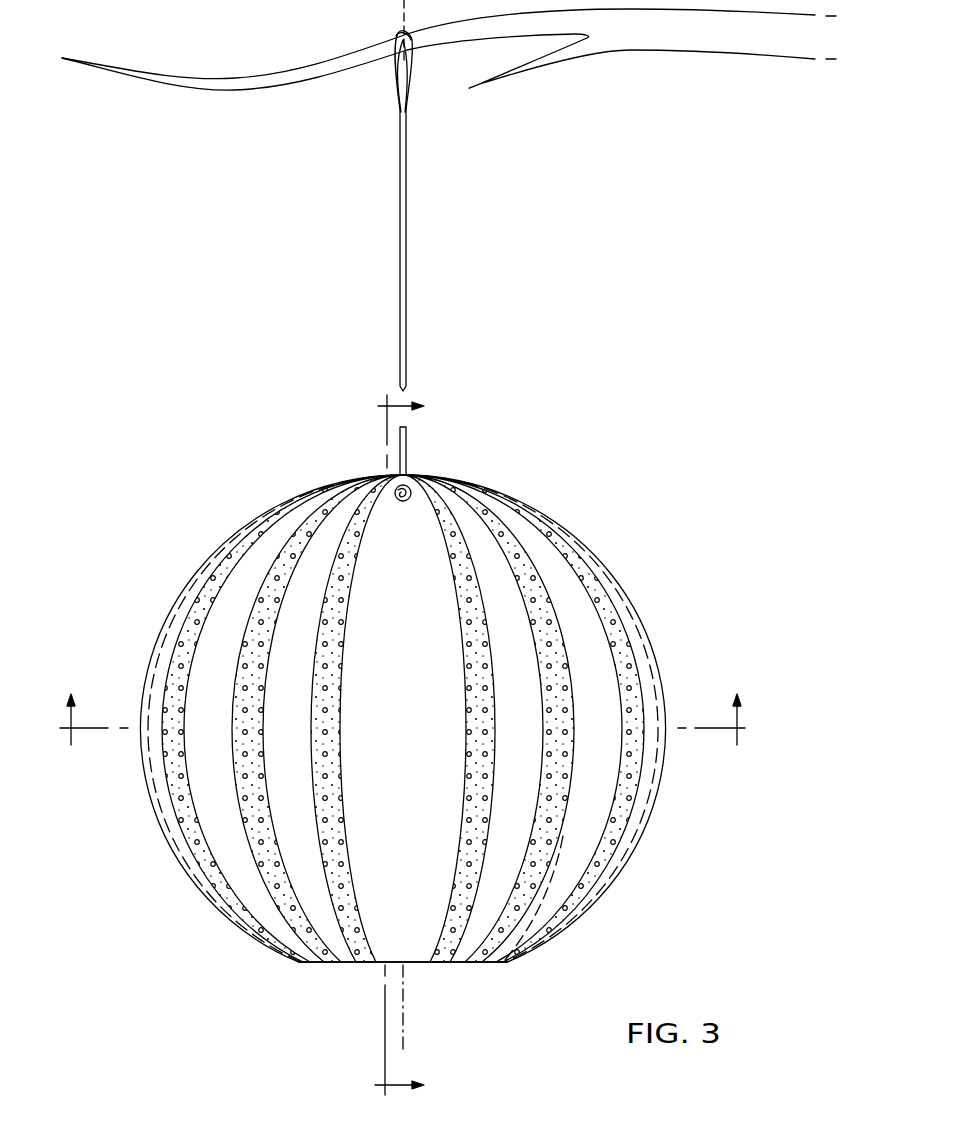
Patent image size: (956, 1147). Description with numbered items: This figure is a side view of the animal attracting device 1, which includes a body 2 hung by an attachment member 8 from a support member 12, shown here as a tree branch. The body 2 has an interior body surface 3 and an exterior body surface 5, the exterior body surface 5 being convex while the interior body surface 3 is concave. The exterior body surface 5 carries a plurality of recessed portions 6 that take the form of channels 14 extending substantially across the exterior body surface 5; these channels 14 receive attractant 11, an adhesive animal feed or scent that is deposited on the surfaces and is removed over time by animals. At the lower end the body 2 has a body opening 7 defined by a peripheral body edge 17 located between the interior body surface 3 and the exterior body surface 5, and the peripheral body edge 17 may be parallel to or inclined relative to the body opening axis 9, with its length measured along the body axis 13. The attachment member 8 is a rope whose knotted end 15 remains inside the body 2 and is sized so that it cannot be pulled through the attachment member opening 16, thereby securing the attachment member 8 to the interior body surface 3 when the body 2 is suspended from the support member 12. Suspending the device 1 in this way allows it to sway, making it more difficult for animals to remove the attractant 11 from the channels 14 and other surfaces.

The animal attracting device 1 is at (392, 761).
The body 2 is at (165, 622).
The interior body surface 3 is at (596, 888).
The exterior body surface 5 is at (594, 536).
The recessed portion 6 is at (140, 881).
The body opening 7 is at (485, 1010).
The attachment member 8 is at (378, 195).
The body opening axis 9 is at (404, 1036).
The attractant 11 is at (477, 624).
The support member 12 is at (680, 45).
The body axis 13 is at (385, 0).
The channel 14 is at (640, 650).
The knotted end 15 is at (400, 503).
The attachment member opening 16 is at (425, 474).
The peripheral body edge 17 is at (509, 964).